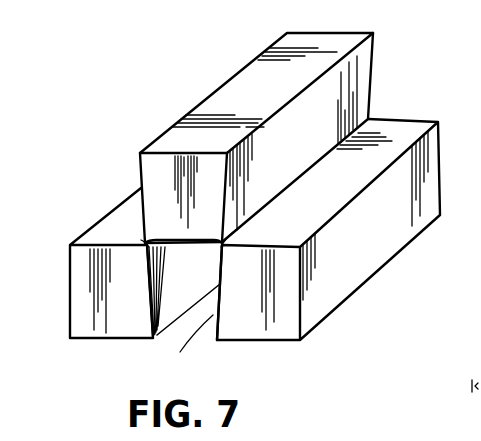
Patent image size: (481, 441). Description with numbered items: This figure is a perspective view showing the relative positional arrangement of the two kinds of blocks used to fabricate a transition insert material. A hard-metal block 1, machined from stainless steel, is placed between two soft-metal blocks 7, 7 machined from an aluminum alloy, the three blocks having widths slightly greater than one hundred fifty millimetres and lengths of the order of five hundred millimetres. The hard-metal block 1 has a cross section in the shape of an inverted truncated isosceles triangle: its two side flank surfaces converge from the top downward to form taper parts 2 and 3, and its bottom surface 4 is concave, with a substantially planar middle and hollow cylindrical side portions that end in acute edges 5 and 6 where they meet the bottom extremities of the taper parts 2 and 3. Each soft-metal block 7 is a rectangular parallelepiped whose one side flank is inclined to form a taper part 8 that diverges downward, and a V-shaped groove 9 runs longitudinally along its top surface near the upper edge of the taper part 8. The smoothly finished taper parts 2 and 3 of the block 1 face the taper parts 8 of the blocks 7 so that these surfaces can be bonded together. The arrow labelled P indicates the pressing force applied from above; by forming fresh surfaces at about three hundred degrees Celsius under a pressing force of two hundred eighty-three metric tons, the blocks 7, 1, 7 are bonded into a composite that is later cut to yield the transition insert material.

The hard-metal block 1 is at (208, 113).
The taper part 2 is at (358, 93).
The taper part 3 is at (140, 167).
The bottom surface 4 is at (182, 243).
The acute edge 5 is at (225, 248).
The acute edge 6 is at (146, 249).
The soft-metal block 7 is at (74, 278).
The taper part 8 is at (170, 320).
The V-shaped groove 9 is at (145, 243).
The pressing force P is at (248, 88).